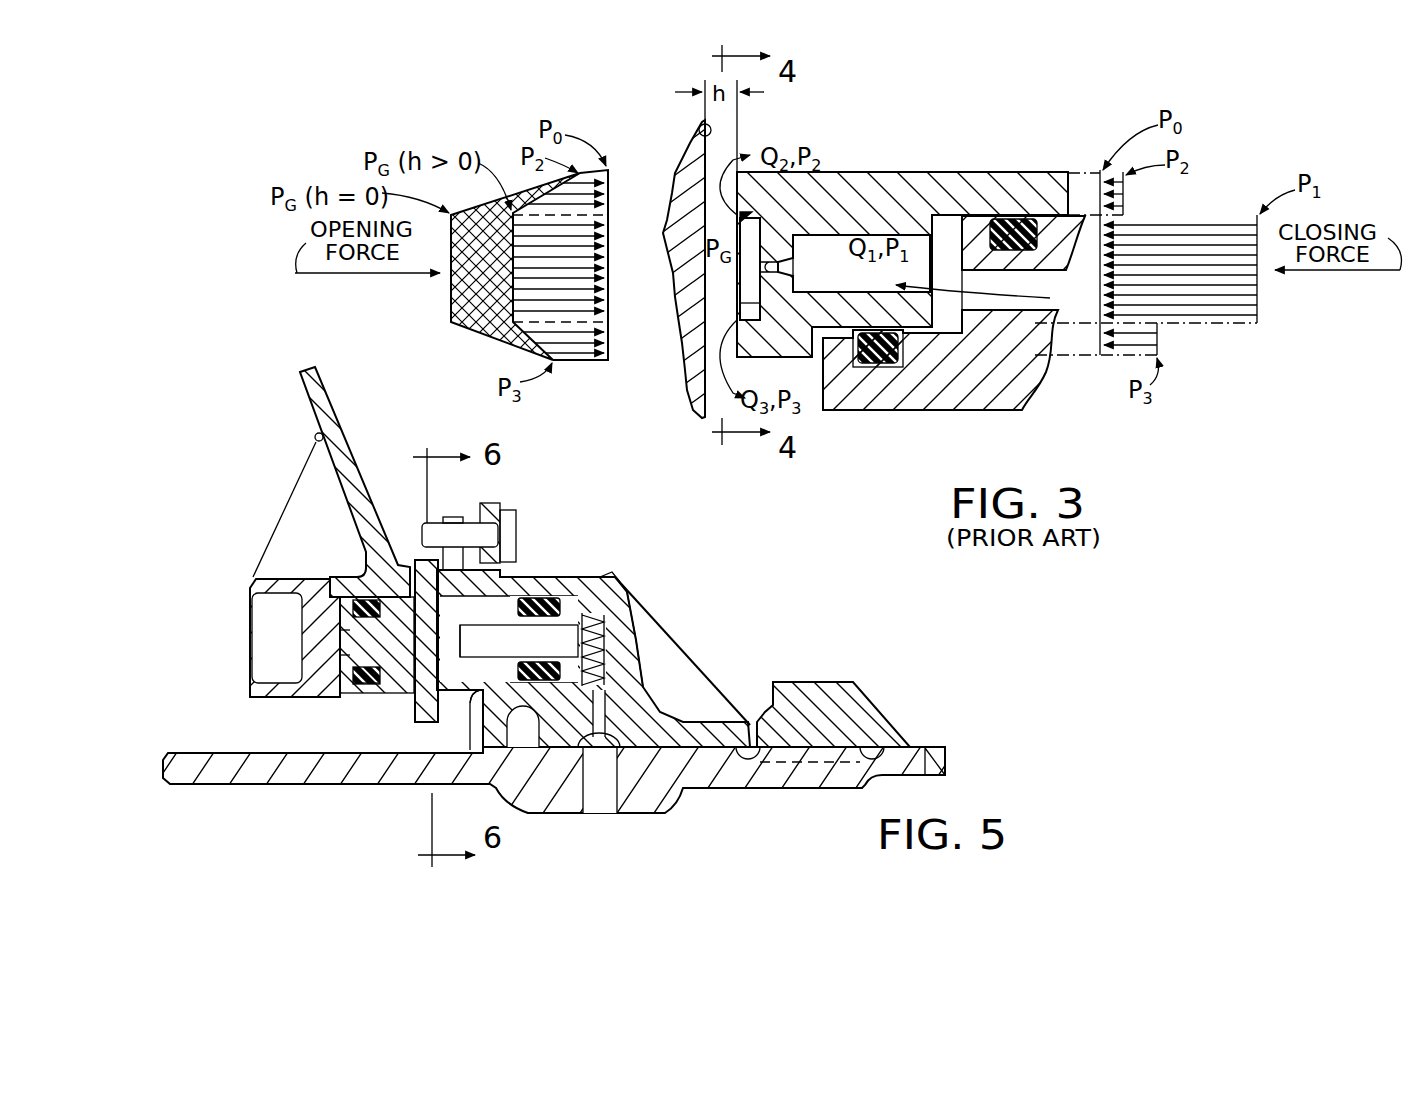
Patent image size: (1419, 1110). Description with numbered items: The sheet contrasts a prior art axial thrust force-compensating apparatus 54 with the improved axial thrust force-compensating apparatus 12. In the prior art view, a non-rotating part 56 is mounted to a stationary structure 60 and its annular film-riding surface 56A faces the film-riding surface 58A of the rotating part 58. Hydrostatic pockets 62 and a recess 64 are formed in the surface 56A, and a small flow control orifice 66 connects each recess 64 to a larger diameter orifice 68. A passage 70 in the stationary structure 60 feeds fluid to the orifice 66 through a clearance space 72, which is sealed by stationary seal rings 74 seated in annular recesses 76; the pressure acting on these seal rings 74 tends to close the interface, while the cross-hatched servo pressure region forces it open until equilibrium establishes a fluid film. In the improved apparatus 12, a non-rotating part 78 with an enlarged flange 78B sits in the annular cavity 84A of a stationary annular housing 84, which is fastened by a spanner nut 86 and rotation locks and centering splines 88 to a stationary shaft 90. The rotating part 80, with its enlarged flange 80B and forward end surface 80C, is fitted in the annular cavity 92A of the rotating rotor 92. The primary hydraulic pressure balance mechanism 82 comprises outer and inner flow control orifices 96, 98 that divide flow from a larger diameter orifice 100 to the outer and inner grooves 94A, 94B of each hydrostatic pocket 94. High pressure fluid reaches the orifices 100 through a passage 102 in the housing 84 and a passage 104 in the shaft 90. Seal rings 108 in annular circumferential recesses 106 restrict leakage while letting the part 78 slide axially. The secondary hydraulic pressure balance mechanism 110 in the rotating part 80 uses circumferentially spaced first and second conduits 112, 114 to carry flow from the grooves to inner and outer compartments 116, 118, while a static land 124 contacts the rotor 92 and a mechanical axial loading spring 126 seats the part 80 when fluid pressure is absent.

In FIG. 5, the axial thrust force-compensating apparatus 12 is at (627, 582).
In FIG. 3, the prior art force-compensating apparatus 54 is at (1086, 140).
In FIG. 3, the non-rotating part 56 is at (955, 172).
In FIG. 3, the film-riding surface 56A is at (738, 358).
In FIG. 3, the rotating part 58 is at (690, 398).
In FIG. 3, the film-riding surface 58A is at (702, 123).
In FIG. 3, the stationary structure 60 is at (990, 415).
In FIG. 3, the hydrostatic pocket 62 is at (739, 218).
In FIG. 3, the recess 64 is at (758, 302).
In FIG. 3, the flow control orifice 66 is at (784, 267).
In FIG. 3, the larger diameter orifice 68 is at (886, 234).
In FIG. 3, the passage 70 is at (1052, 309).
In FIG. 3, the clearance space 72 is at (960, 273).
In FIG. 3, the seal ring 74 is at (1020, 219).
In FIG. 3, the annular recess 76 is at (1058, 258).
In FIG. 5, the non-rotating part 78 is at (536, 598).
In FIG. 5, the enlarged flange 78B is at (470, 690).
In FIG. 5, the rotating part 80 is at (380, 684).
In FIG. 5, the enlarged flange 80B is at (380, 695).
In FIG. 5, the forward end surface 80C is at (350, 606).
In FIG. 5, the primary hydraulic pressure balance mechanism 82 is at (474, 705).
In FIG. 5, the stationary annular housing 84 is at (700, 720).
In FIG. 5, the annular cavity 84A is at (640, 641).
In FIG. 5, the spanner nut 86 is at (860, 720).
In FIG. 5, the rotation locks and centering splines 88 is at (488, 540).
In FIG. 5, the stationary shaft 90 is at (705, 775).
In FIG. 5, the rotating rotor 92 is at (302, 375).
In FIG. 5, the annular cavity 92A is at (325, 577).
In FIG. 5, the hydrostatic pocket 94 is at (505, 540).
In FIG. 5, the outer groove 94A is at (506, 575).
In FIG. 5, the inner groove 94B is at (477, 694).
In FIG. 5, the outer flow control orifice 96 is at (455, 612).
In FIG. 5, the inner flow control orifice 98 is at (545, 660).
In FIG. 5, the larger diameter orifice 100 is at (600, 607).
In FIG. 5, the passage 102 is at (608, 715).
In FIG. 5, the passage 104 is at (603, 782).
In FIG. 5, the annular circumferential recess 106 is at (615, 582).
In FIG. 5, the seal ring 108 is at (562, 598).
In FIG. 5, the secondary hydraulic pressure balance mechanism 110 is at (275, 700).
In FIG. 5, the first conduit 112 is at (372, 570).
In FIG. 5, the second conduit 114 is at (345, 690).
In FIG. 5, the inner compartment 116 is at (342, 657).
In FIG. 5, the outer compartment 118 is at (312, 597).
In FIG. 5, the static land 124 is at (338, 634).
In FIG. 5, the mechanical axial loading spring 126 is at (604, 664).